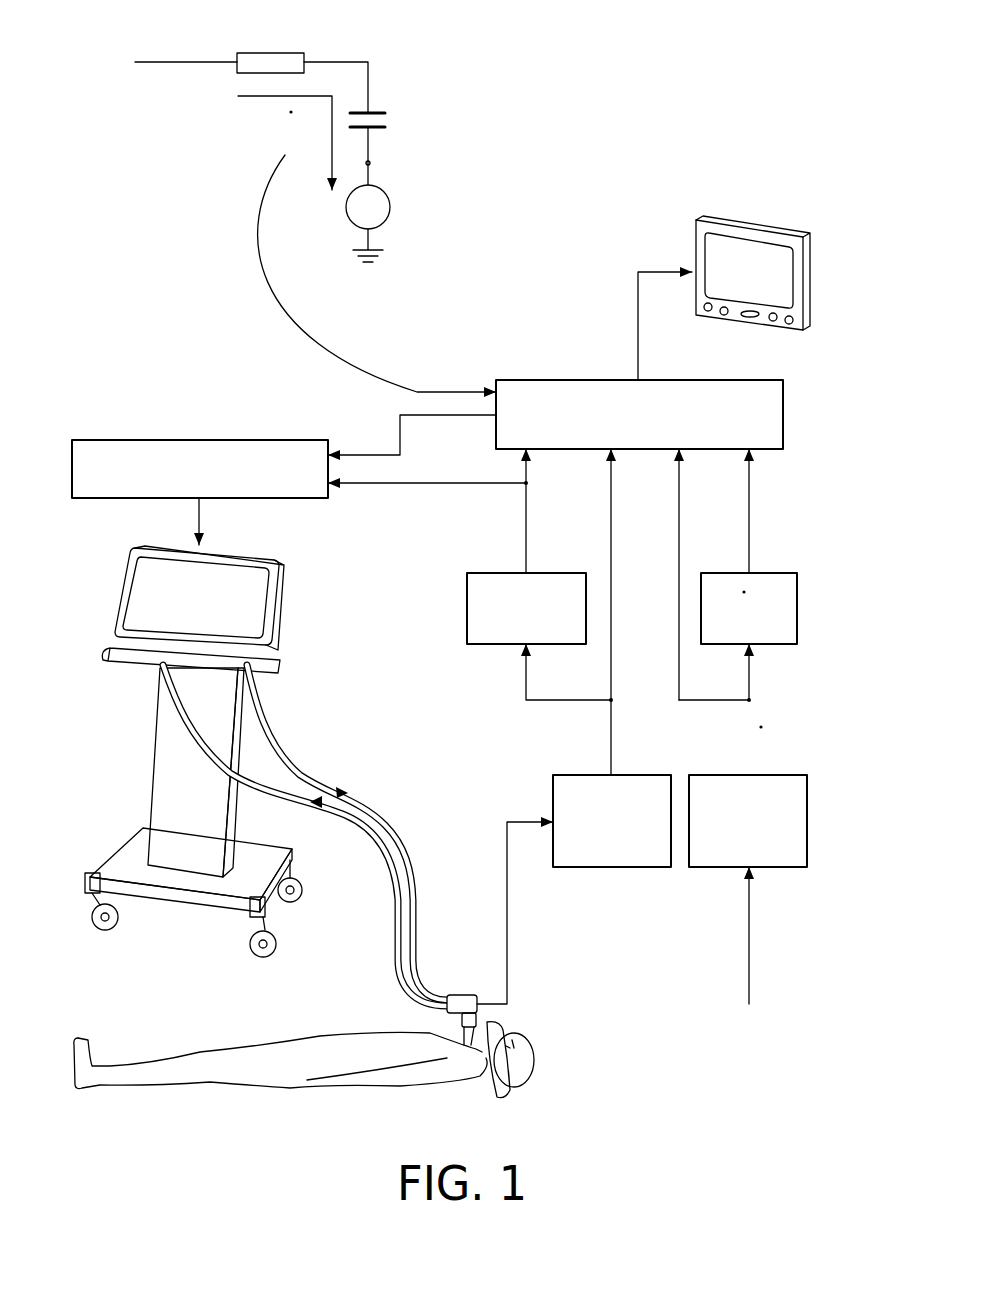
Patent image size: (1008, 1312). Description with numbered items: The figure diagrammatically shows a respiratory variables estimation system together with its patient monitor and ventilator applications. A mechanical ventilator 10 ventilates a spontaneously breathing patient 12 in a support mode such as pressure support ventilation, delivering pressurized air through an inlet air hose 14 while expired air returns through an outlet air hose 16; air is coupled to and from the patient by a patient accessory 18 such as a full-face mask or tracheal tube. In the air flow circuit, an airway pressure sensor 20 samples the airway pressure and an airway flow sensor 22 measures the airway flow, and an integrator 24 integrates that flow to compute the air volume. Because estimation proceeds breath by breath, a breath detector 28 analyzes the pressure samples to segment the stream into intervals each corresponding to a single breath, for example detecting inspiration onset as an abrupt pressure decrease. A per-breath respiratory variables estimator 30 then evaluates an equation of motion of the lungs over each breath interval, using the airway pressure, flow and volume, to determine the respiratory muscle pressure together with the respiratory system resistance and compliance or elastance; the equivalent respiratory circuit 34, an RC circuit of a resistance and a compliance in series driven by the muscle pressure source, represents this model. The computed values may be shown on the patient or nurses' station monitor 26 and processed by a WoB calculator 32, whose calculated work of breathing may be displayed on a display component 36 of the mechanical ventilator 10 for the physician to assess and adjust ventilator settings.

The mechanical ventilator 10 is at (142, 713).
The patient 12 is at (252, 1050).
The inlet air hose 14 is at (358, 793).
The outlet air hose 16 is at (353, 823).
The patient accessory 18 is at (462, 995).
The airway pressure sensor 20 is at (573, 867).
The airway flow sensor 22 is at (787, 867).
The integrator 24 is at (797, 600).
The monitor 26 is at (775, 227).
The breath detector 28 is at (467, 600).
The per-breath respiratory variables estimator 30 is at (545, 380).
The WoB calculator 32 is at (108, 440).
The equivalent respiratory circuit 34 is at (455, 97).
The display component 36 is at (186, 613).